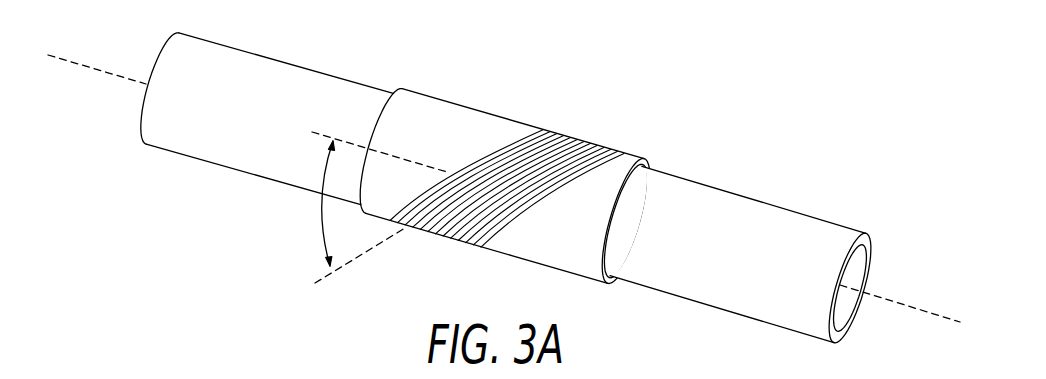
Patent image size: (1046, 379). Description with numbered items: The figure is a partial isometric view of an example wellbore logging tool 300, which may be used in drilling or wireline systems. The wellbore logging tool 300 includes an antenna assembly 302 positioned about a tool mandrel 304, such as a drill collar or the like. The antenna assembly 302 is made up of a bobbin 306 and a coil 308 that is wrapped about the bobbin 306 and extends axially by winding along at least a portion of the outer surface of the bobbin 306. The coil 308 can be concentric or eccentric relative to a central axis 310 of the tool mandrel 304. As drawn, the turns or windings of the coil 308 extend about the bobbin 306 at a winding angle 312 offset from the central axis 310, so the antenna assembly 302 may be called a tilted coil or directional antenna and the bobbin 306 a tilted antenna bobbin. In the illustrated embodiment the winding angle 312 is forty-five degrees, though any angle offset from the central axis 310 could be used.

The wellbore logging tool 300 is at (677, 72).
The antenna assembly 302 is at (508, 168).
The tool mandrel 304 is at (757, 200).
The bobbin 306 is at (437, 97).
The coil 308 is at (587, 133).
The central axis 310 is at (895, 302).
The winding angle 312 is at (353, 212).